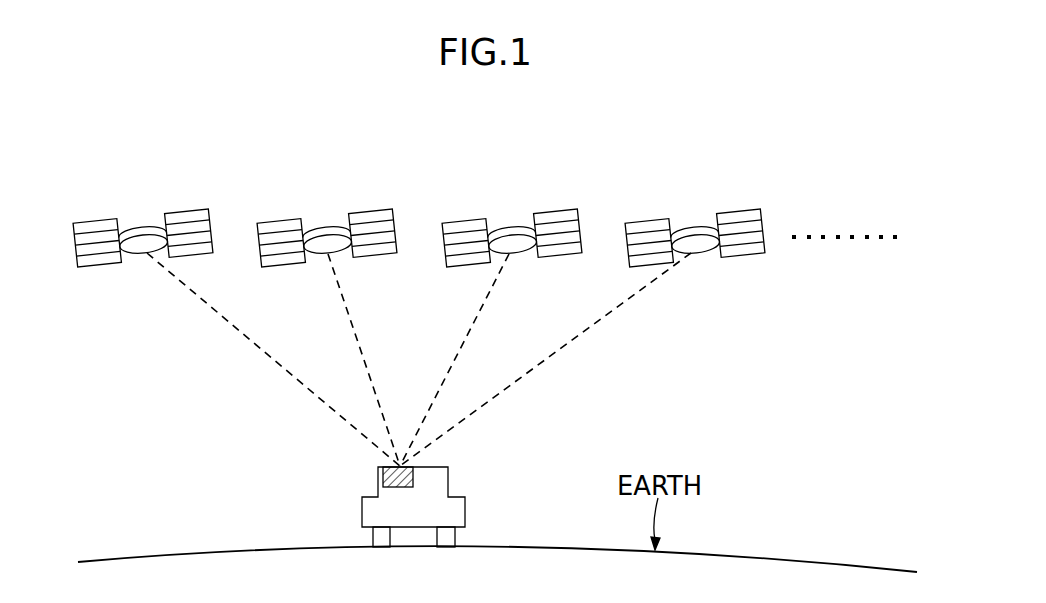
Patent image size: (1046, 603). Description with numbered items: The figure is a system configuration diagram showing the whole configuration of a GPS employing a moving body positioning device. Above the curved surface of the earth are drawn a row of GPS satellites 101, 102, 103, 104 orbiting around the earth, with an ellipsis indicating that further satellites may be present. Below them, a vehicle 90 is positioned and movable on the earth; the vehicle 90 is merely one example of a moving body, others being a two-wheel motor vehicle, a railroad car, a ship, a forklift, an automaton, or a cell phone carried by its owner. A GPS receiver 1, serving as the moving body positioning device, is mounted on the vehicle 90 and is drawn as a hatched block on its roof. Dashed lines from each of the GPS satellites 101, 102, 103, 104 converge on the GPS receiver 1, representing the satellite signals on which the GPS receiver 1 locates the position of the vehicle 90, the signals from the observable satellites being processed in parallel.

The GPS satellite 101 is at (143, 224).
The GPS satellite 102 is at (327, 224).
The GPS satellite 103 is at (512, 224).
The GPS satellite 104 is at (695, 224).
The GPS receiver 1 is at (413, 478).
The vehicle 90 is at (478, 498).